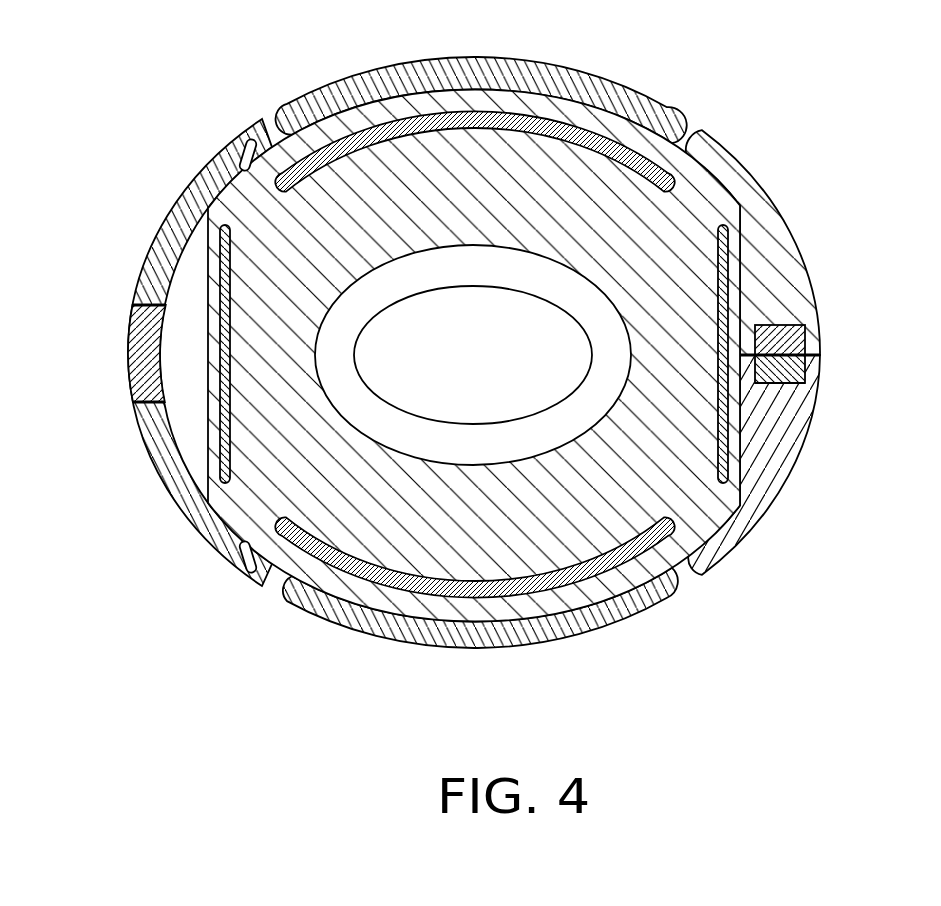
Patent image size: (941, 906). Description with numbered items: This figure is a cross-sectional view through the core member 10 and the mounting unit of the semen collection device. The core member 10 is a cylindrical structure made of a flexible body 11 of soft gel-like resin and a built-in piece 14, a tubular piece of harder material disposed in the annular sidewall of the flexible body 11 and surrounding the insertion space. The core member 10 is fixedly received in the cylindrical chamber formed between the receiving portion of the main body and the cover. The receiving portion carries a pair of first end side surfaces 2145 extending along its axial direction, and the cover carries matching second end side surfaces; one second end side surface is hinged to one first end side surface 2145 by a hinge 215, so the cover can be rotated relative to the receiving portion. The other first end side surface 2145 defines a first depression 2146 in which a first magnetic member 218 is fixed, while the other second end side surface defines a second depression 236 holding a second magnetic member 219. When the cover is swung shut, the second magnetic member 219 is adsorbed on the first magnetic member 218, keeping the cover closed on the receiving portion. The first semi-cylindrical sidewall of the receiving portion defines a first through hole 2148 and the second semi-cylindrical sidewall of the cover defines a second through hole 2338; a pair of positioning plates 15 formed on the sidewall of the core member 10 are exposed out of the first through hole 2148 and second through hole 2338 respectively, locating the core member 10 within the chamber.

The core member 10 is at (569, 356).
The flexible body 11 is at (693, 200).
The built-in piece 14 is at (728, 247).
The positioning plate 15 is at (495, 83).
The hinge 215 is at (138, 347).
The first magnetic member 218 is at (777, 370).
The second magnetic member 219 is at (788, 338).
The second depression 236 is at (840, 366).
The first end side surfaces 2145 is at (806, 355).
The first depression 2146 is at (781, 383).
The first through hole 2148 is at (260, 570).
The second through hole 2338 is at (258, 137).